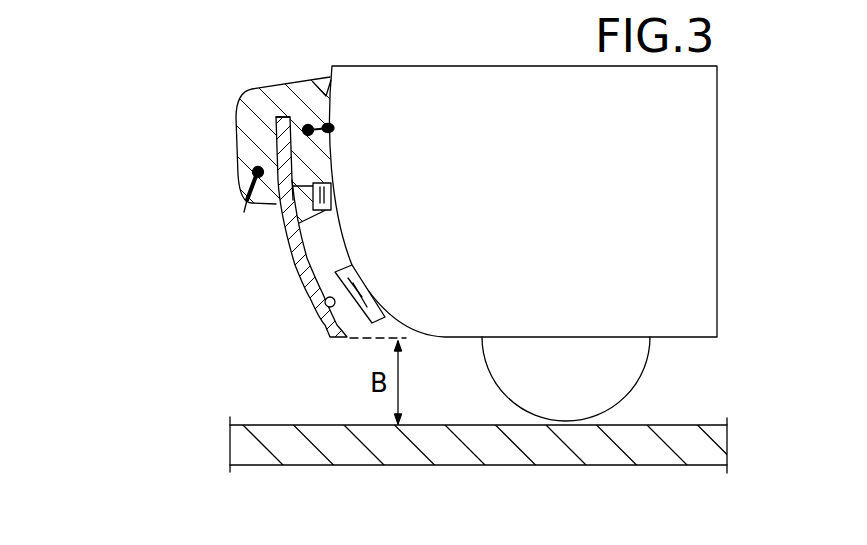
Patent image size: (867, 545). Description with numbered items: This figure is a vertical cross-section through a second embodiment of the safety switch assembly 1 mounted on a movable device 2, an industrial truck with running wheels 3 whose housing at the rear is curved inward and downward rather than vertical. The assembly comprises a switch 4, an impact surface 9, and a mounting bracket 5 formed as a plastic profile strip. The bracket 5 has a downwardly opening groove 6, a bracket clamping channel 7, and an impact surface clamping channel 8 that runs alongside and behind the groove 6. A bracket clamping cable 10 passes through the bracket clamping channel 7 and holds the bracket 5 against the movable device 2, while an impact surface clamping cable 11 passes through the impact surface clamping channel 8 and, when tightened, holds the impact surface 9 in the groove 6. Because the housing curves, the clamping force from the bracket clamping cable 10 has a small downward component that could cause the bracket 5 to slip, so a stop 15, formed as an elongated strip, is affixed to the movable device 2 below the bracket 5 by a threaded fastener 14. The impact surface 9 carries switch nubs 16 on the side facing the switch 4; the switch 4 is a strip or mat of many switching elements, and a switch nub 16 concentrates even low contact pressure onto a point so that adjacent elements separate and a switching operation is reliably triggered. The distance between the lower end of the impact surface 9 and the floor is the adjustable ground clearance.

The safety switch assembly 1 is at (108, 190).
The movable device 2 is at (523, 201).
The running wheels 3 is at (617, 355).
The switch 4 is at (367, 290).
The mounting bracket 5 is at (236, 125).
The groove 6 is at (276, 138).
The bracket clamping channel 7 is at (333, 128).
The impact surface clamping channel 8 is at (245, 208).
The impact surface 9 is at (300, 270).
The bracket clamping cable 10 is at (306, 128).
The impact surface clamping cable 11 is at (253, 174).
The threaded fastener 14 is at (340, 195).
The stop 15 is at (297, 222).
The switch nub 16 is at (325, 306).